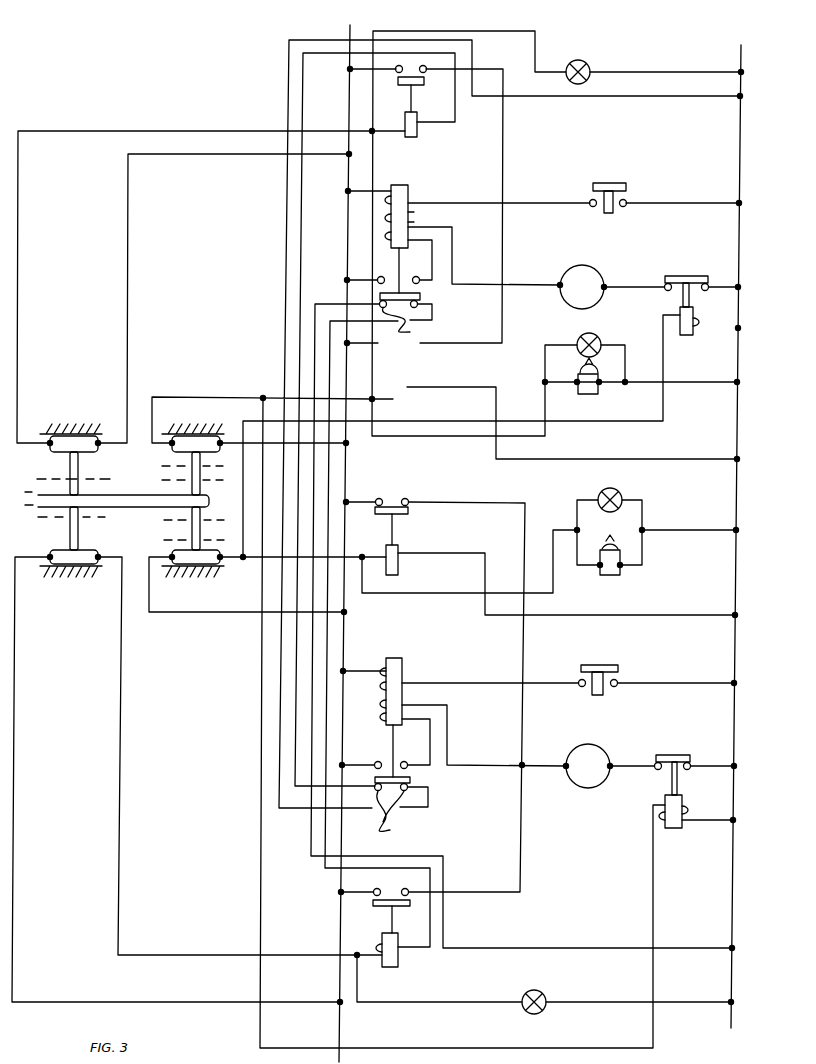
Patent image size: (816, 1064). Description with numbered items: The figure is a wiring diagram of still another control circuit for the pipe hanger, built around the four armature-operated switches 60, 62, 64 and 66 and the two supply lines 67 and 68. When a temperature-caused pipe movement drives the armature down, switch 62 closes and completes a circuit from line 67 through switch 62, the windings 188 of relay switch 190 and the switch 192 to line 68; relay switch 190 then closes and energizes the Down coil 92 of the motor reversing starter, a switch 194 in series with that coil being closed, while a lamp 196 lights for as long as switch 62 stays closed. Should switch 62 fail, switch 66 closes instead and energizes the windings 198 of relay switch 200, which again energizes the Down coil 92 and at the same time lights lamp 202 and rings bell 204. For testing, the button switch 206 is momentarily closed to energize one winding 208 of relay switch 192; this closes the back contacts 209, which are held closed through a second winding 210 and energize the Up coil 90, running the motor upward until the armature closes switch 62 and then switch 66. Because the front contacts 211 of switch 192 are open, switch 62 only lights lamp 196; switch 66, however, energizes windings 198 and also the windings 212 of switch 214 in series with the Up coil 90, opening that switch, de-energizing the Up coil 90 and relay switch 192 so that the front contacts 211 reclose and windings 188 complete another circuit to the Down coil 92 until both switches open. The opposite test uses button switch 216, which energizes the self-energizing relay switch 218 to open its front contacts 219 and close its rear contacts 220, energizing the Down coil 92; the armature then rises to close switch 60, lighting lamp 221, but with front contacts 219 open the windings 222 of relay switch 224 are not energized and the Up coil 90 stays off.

The switch 60 is at (71, 459).
The switch 62 is at (71, 542).
The switch 64 is at (193, 459).
The switch 66 is at (193, 542).
The line 67 is at (345, 28).
The line 68 is at (736, 560).
The Up coil 90 is at (598, 270).
The Down coil 92 is at (600, 746).
The windings 188 is at (400, 950).
The relay switch 190 is at (390, 968).
The switch 192 is at (421, 297).
The switch 194 is at (676, 830).
The lamp 196 is at (530, 1013).
The windings 198 is at (400, 564).
The relay switch 200 is at (410, 512).
The lamp 202 is at (620, 494).
The bell 204 is at (606, 576).
The button switch 206 is at (626, 185).
The winding 208 is at (400, 204).
The back contacts 209 is at (414, 278).
The second winding 210 is at (409, 222).
The front contacts 211 is at (412, 332).
The windings 212 is at (680, 325).
The switch 214 is at (692, 270).
The button switch 216 is at (619, 670).
The self-energizing relay switch 218 is at (396, 745).
The front contacts 219 is at (392, 827).
The rear contacts 220 is at (408, 768).
The lamp 221 is at (590, 66).
The windings 222 is at (417, 124).
The relay switch 224 is at (412, 136).